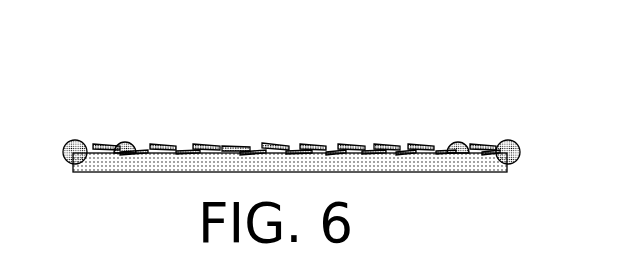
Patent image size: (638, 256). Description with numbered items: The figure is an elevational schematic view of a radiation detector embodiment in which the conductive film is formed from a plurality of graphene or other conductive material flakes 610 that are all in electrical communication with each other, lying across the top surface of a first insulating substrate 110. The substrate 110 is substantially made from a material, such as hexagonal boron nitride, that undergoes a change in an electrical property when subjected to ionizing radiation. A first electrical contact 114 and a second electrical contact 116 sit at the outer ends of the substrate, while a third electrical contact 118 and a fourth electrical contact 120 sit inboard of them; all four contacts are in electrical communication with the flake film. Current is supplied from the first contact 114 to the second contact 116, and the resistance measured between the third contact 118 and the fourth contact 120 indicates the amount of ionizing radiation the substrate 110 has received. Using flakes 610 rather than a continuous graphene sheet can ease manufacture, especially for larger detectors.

The first insulating substrate 110 is at (416, 164).
The first electrical contact 114 is at (83, 141).
The second electrical contact 116 is at (505, 141).
The third electrical contact 118 is at (125, 141).
The fourth electrical contact 120 is at (458, 141).
The flakes 610 is at (259, 147).